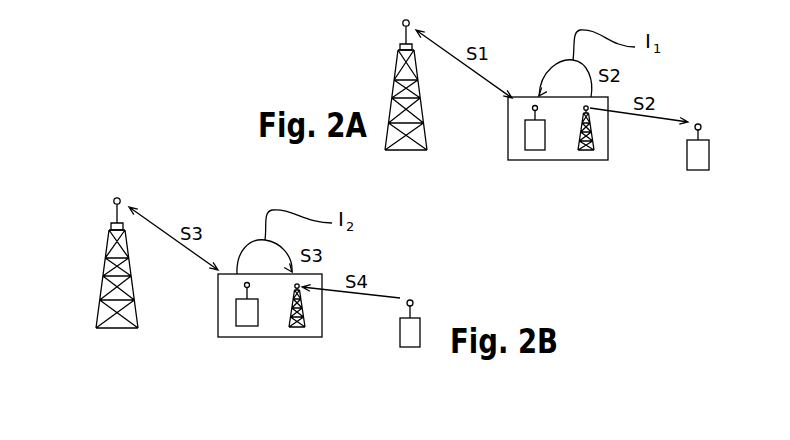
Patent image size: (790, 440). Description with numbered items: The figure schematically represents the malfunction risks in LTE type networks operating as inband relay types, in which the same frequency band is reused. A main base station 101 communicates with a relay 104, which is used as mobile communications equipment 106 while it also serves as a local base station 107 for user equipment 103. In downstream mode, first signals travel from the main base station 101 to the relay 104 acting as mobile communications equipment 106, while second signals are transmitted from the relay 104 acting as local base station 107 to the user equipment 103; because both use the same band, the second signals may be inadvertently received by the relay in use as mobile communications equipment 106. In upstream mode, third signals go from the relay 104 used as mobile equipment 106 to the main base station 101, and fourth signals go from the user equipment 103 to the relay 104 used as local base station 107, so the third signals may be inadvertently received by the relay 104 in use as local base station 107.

In FIG. 2A, the main base station 101 is at (388, 100).
In FIG. 2B, the main base station 101 is at (101, 276).
In FIG. 2A, the user equipment 103 is at (698, 170).
In FIG. 2B, the user equipment 103 is at (410, 347).
In FIG. 2A, the relay 104 is at (558, 160).
In FIG. 2B, the relay 104 is at (270, 337).
In FIG. 2A, the mobile communications equipment 106 is at (535, 145).
In FIG. 2B, the mobile communications equipment 106 is at (242, 325).
In FIG. 2A, the local base station 107 is at (586, 150).
In FIG. 2B, the local base station 107 is at (298, 330).